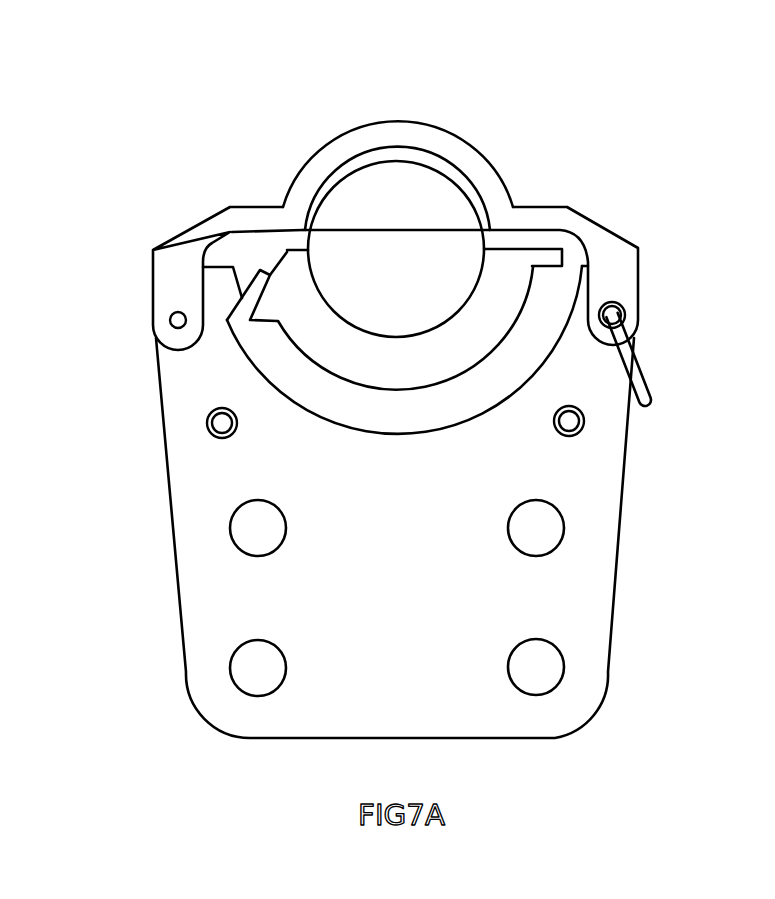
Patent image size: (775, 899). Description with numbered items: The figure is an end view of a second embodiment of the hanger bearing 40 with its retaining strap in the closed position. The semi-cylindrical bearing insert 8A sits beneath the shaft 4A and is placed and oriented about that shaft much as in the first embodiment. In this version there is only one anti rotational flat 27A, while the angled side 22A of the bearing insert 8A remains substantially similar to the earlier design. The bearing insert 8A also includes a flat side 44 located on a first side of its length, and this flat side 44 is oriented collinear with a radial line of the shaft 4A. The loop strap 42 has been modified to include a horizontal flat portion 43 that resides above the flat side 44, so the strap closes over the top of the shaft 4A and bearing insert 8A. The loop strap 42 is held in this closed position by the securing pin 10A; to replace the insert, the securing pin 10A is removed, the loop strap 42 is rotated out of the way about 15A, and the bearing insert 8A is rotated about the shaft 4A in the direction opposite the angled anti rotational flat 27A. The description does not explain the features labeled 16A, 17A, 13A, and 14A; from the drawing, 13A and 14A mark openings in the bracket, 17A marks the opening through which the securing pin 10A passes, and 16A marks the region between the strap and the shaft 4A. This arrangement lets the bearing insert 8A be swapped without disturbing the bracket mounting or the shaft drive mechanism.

The hanger bearing 40 is at (610, 663).
The loop strap 42 is at (410, 120).
The bushing 16A is at (380, 155).
The shaft 4A is at (450, 177).
The horizontal flat portion 43 is at (510, 228).
The flat side 44 is at (507, 250).
The angled side 22A is at (280, 255).
The anti rotational flat 27A is at (252, 275).
The bearing insert 8A is at (325, 340).
The pivot hole 15A is at (170, 318).
The pin hole 17A is at (620, 310).
The securing pin 10A is at (638, 353).
The mounting holes 13A is at (286, 530).
The fastener holes 14A is at (236, 428).